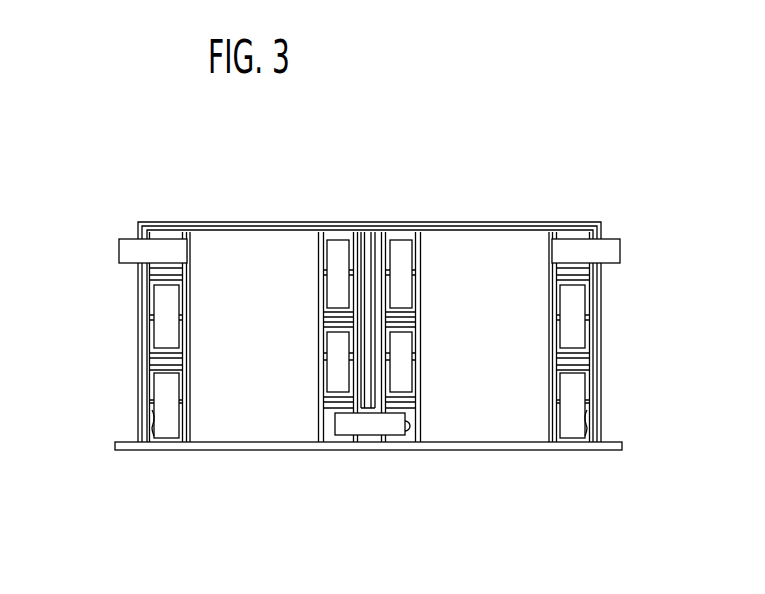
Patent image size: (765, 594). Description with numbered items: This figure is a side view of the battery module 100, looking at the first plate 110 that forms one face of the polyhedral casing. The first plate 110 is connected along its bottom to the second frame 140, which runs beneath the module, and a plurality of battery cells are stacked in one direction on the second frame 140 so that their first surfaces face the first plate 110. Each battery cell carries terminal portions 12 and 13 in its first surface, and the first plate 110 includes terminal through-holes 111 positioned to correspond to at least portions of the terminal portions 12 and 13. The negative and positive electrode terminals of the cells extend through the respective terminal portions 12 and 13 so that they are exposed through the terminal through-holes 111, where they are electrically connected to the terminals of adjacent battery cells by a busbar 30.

The battery module 100 is at (257, 201).
The first plate 110 is at (262, 432).
The terminal through-hole 111 is at (140, 422).
The terminal portion 12 is at (413, 430).
The terminal portion 13 is at (330, 432).
The second frame 140 is at (479, 468).
The busbar 30 is at (168, 395).